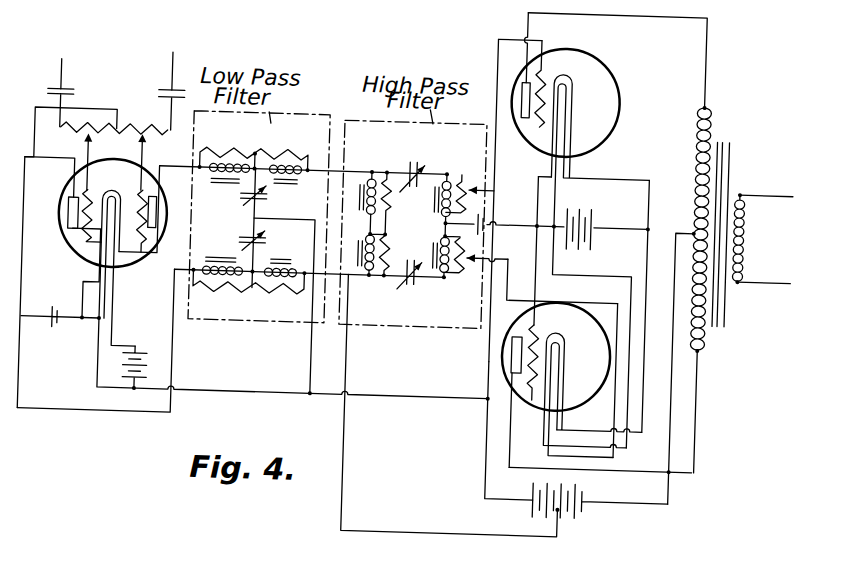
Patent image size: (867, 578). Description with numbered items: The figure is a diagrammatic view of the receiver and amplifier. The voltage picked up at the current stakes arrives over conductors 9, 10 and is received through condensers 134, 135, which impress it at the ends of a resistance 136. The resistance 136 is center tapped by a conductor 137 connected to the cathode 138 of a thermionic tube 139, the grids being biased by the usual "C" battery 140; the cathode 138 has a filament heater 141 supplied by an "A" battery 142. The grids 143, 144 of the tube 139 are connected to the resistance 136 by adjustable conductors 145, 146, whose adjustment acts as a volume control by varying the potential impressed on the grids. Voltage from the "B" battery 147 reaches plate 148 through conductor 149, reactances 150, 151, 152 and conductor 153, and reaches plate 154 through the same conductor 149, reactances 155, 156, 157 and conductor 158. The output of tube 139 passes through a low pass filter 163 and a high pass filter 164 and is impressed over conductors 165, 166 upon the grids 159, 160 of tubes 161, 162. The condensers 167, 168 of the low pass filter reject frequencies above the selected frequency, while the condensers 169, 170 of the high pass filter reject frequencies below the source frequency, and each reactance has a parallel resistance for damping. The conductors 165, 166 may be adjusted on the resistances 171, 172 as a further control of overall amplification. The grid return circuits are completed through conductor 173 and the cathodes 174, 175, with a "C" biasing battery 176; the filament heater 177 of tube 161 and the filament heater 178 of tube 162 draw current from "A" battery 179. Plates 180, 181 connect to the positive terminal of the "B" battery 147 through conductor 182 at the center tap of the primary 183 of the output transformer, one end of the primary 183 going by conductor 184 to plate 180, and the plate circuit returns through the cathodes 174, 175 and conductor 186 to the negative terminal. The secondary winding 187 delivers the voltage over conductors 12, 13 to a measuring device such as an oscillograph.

The conductor 9 is at (55, 77).
The conductor 10 is at (166, 63).
The conductor 12 is at (760, 185).
The conductor 13 is at (761, 275).
The condenser 134 is at (72, 104).
The condenser 135 is at (162, 97).
The resistance 136 is at (163, 141).
The conductor 137 is at (113, 120).
The cathode 138 is at (93, 274).
The thermionic tube 139 is at (116, 283).
The "C" battery 140 is at (54, 346).
The filament heater 141 is at (150, 262).
The "A" battery 142 is at (137, 354).
The grid 143 is at (87, 206).
The grid 144 is at (111, 203).
The adjustable conductor 145 is at (87, 162).
The adjustable conductor 146 is at (140, 165).
The "B" battery 147 is at (593, 483).
The plate 148 is at (155, 214).
The conductor 149 is at (349, 461).
The reactance 150 is at (367, 215).
The reactance 151 is at (293, 183).
The reactance 152 is at (240, 207).
The conductor 153 is at (217, 181).
The plate 154 is at (67, 214).
The reactance 155 is at (360, 278).
The reactance 156 is at (288, 261).
The reactance 157 is at (196, 266).
The conductor 158 is at (175, 364).
The grid 159 is at (545, 77).
The grid 160 is at (535, 398).
The tube 161 is at (614, 102).
The tube 162 is at (581, 305).
The low pass filter 163 is at (256, 327).
The high pass filter 164 is at (412, 328).
The conductor 165 is at (491, 152).
The conductor 166 is at (508, 290).
The condenser 167 is at (257, 207).
The condenser 168 is at (259, 247).
The condenser 169 is at (407, 195).
The condenser 170 is at (404, 262).
The resistance 171 is at (458, 180).
The resistance 172 is at (462, 274).
The conductor 173 is at (515, 226).
The cathode 174 is at (545, 152).
The cathode 175 is at (552, 328).
The "C" biasing battery 176 is at (492, 190).
The filament heater 177 is at (567, 102).
The grid lead 178 is at (567, 360).
The "A" battery 179 is at (585, 210).
The plate 180 is at (514, 78).
The plate 181 is at (514, 372).
The conductor 182 is at (673, 381).
The primary winding 183 is at (707, 327).
The conductor 184 is at (700, 71).
The conductor 186 is at (490, 366).
The secondary winding 187 is at (745, 233).